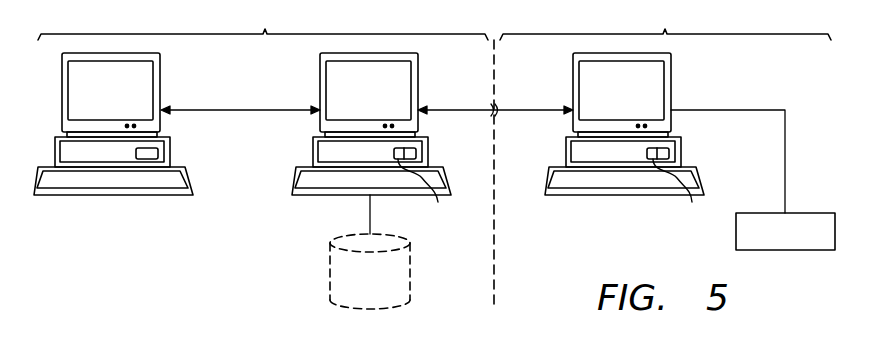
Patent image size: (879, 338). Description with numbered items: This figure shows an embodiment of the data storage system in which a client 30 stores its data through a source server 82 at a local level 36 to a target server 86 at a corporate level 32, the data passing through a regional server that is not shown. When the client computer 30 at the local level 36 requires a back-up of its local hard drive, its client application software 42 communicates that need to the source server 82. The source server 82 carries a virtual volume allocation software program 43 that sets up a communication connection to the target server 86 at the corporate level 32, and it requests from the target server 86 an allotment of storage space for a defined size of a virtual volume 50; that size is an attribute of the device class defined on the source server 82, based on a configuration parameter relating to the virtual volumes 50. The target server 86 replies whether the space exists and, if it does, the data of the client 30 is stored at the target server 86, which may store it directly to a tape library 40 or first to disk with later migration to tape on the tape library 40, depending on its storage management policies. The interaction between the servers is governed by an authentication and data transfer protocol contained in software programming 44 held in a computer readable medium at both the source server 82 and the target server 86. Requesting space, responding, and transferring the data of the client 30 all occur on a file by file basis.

The client computer 30 is at (122, 124).
The source server 82 is at (378, 124).
The target server 86 is at (632, 124).
The client application software 42 is at (153, 153).
The software programming 44 is at (551, 146).
The virtual volume allocation software program 43 is at (550, 194).
The virtual volume 50 is at (330, 270).
The tape library 40 is at (798, 240).
The local level 36 is at (263, 22).
The corporate level 32 is at (665, 22).